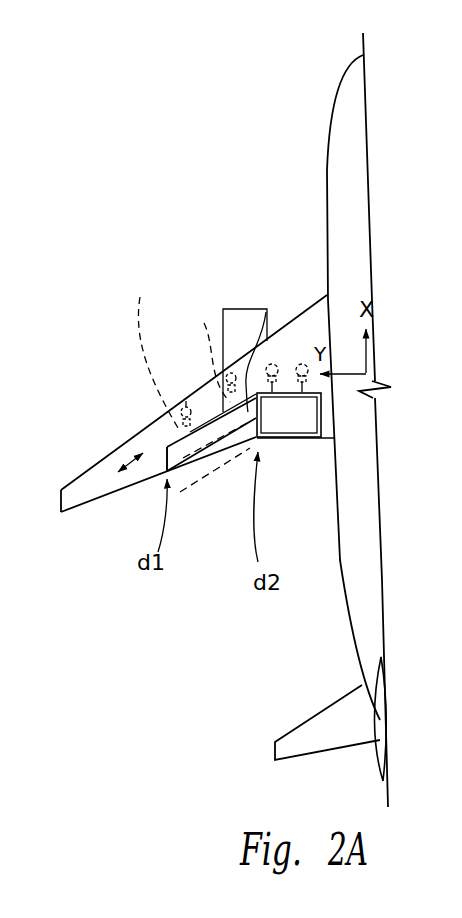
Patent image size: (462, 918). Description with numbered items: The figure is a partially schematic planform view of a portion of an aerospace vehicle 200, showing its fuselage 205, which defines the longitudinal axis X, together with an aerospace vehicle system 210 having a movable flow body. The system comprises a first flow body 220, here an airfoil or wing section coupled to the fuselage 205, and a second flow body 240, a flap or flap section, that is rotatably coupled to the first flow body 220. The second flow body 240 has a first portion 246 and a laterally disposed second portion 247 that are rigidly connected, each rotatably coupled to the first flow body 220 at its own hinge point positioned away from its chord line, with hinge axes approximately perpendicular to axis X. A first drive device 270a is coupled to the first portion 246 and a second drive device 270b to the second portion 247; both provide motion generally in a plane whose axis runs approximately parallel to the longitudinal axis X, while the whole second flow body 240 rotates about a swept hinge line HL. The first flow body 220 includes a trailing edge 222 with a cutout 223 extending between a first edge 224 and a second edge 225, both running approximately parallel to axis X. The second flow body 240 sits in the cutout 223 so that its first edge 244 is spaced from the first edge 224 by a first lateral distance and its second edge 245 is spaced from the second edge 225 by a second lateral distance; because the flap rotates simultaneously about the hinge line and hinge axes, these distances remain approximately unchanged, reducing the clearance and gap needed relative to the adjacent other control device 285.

The aerospace vehicle 200 is at (347, 62).
The fuselage 205 is at (337, 172).
The aerospace vehicle system 210 is at (92, 298).
The first flow body 220 is at (122, 451).
The trailing edge 222 is at (100, 500).
The cutout 223 is at (197, 490).
The first edge 224 is at (167, 446).
The second edge 225 is at (262, 309).
The second flow body 240 is at (213, 420).
The first edge 244 is at (166, 471).
The second edge 245 is at (258, 423).
The first portion 246 is at (176, 425).
The second portion 247 is at (240, 410).
The first drive device 270a is at (150, 348).
The second drive device 270b is at (195, 350).
The other control device 285 is at (300, 427).